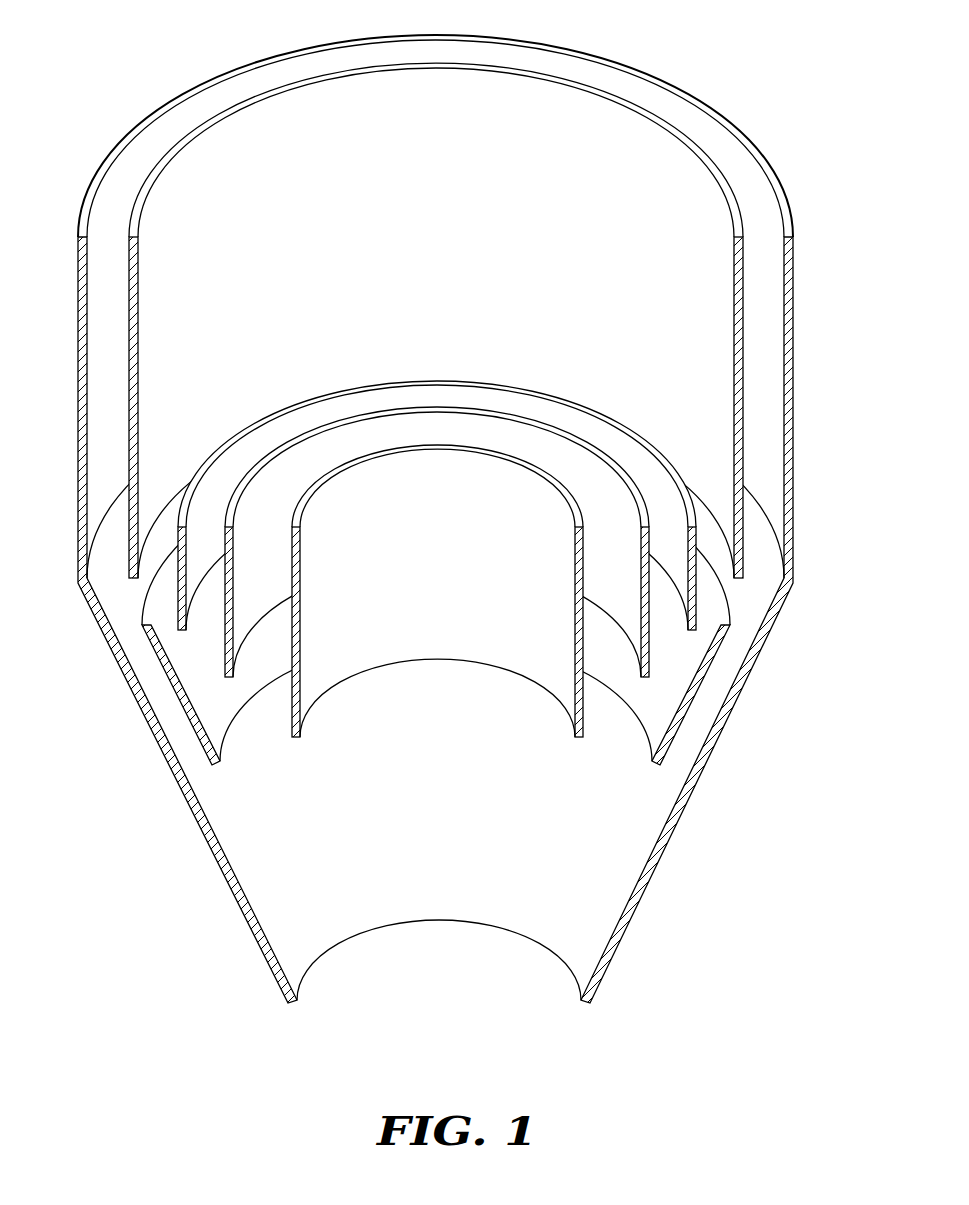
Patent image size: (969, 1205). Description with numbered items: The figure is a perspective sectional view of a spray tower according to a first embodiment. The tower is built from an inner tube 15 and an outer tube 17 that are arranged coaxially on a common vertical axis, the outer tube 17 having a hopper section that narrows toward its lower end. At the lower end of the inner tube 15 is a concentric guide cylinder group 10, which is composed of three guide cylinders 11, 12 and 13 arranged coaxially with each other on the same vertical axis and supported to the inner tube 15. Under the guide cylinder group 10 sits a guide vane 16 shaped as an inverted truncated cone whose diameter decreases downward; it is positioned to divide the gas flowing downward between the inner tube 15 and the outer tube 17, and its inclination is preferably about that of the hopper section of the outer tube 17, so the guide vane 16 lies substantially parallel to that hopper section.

The guide cylinder group 10 is at (435, 507).
The guide cylinder 11 is at (357, 668).
The guide cylinder 12 is at (332, 447).
The guide cylinder 13 is at (208, 493).
The inner tube 15 is at (635, 127).
The guide vane 16 is at (658, 723).
The outer tube 17 is at (747, 173).